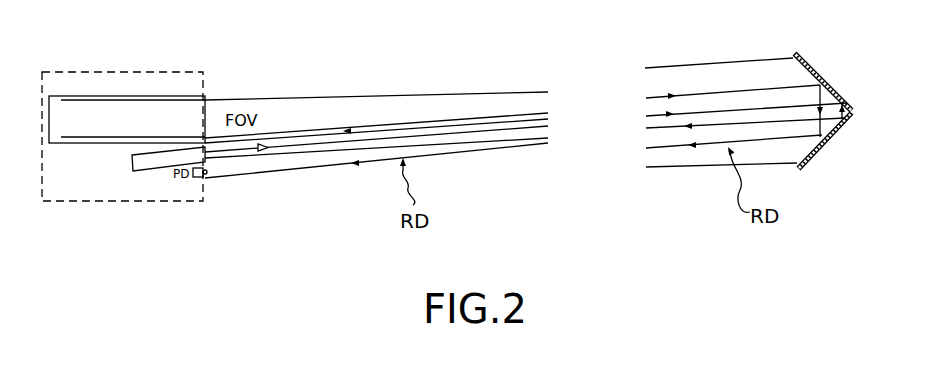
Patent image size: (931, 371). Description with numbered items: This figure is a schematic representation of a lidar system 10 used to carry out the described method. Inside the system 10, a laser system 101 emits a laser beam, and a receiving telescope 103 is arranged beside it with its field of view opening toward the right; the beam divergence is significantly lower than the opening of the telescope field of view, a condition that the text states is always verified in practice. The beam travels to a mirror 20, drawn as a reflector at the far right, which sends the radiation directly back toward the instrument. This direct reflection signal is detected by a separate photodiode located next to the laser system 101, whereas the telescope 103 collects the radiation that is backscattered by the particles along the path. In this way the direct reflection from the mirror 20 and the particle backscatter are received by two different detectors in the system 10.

The laser rangefinder instrument 10 is at (121, 205).
The mirror 20 is at (826, 73).
The laser system 101 is at (131, 158).
The receiving telescope 103 is at (121, 95).